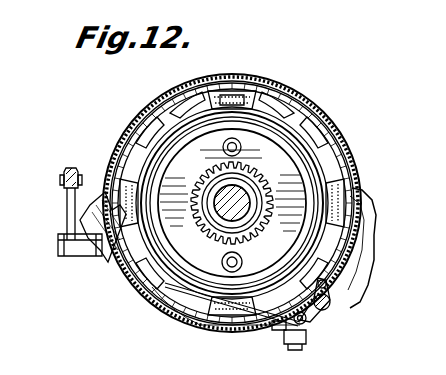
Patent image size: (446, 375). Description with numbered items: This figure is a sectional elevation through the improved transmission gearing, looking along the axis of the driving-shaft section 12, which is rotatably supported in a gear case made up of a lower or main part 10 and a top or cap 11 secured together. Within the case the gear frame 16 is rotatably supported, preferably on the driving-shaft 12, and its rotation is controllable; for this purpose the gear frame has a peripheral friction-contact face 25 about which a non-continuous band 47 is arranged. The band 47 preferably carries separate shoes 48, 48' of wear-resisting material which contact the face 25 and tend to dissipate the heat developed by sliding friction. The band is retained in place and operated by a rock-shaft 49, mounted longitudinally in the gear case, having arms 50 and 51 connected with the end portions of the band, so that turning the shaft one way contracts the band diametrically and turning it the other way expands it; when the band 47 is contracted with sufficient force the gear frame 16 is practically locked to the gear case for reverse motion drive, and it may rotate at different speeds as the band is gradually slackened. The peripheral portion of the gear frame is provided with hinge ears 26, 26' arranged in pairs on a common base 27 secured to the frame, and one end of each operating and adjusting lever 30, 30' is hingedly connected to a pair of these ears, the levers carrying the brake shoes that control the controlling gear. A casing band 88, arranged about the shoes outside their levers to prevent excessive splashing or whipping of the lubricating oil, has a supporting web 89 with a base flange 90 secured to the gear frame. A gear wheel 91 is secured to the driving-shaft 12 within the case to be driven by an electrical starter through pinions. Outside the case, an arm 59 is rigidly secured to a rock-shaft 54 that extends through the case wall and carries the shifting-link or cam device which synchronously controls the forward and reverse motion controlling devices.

The lower or main part of gear case 10 is at (188, 300).
The top or cap of gear case 11 is at (300, 112).
The driving-shaft section 12 is at (166, 126).
The gear frame 16 is at (182, 103).
The peripheral friction-contact face 25 is at (313, 175).
The hinge ear 26 is at (228, 81).
The hinge ear 26' is at (228, 329).
The common base 27 is at (286, 100).
The operating and adjusting lever 30 is at (235, 79).
The operating and adjusting lever 30' is at (268, 341).
The non-continuous band 47 is at (356, 258).
The shoe 48 is at (162, 144).
The shoe 48' is at (363, 202).
The rock-shaft 49 is at (330, 302).
The arm 50 is at (332, 288).
The arm 51 is at (294, 344).
The rock-shaft 54 is at (60, 256).
The arm 59 is at (78, 205).
The casing band 88 is at (160, 130).
The supporting web 89 is at (158, 148).
The base flange 90 is at (150, 133).
The gear wheel 91 is at (262, 170).